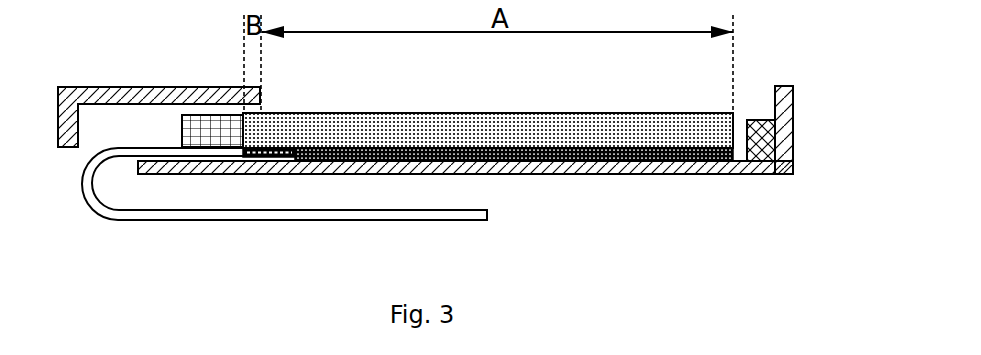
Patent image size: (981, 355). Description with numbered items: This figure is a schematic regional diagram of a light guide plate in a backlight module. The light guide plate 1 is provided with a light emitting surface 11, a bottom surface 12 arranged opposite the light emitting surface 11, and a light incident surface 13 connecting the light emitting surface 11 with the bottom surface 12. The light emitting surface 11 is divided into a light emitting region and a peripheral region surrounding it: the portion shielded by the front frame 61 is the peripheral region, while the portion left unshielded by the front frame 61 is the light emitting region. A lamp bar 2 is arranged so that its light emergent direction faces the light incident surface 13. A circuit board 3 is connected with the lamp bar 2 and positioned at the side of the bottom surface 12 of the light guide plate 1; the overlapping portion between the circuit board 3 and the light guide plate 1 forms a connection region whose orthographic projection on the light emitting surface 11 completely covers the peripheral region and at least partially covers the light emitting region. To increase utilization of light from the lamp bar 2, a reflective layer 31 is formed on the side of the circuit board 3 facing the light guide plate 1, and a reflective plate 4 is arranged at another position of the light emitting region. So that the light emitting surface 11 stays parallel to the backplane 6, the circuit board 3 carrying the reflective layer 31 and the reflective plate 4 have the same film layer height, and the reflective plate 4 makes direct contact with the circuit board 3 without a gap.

The light guide plate 1 is at (548, 117).
The light emitting surface 11 is at (387, 113).
The bottom surface 12 is at (617, 145).
The light incident surface 13 is at (273, 113).
The lamp bar 2 is at (212, 123).
The circuit board 3 is at (102, 160).
The reflective layer 31 is at (270, 153).
The reflective plate 4 is at (667, 152).
The backplane 6 is at (723, 168).
The front frame 61 is at (135, 95).